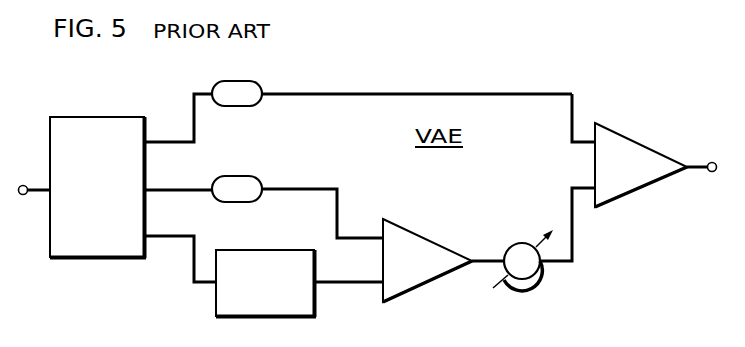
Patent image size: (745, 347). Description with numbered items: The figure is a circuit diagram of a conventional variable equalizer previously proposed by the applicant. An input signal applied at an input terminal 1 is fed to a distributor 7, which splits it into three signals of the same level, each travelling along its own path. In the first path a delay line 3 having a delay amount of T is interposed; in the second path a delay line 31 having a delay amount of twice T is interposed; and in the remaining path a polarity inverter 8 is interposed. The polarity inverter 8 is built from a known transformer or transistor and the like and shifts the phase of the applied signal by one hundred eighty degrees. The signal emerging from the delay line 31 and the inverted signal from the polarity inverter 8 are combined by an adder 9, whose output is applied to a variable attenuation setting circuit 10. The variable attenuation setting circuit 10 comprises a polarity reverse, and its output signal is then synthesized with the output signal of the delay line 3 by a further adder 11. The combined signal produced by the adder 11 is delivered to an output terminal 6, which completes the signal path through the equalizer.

The input terminal 1 is at (24, 185).
The delay line 3 is at (266, 83).
The delay line 31 is at (251, 177).
The output terminal 6 is at (713, 172).
The distributor 7 is at (117, 117).
The polarity inverter 8 is at (264, 250).
The adder 9 is at (425, 233).
The variable attenuation setting circuit 10 is at (514, 242).
The adder 11 is at (627, 136).